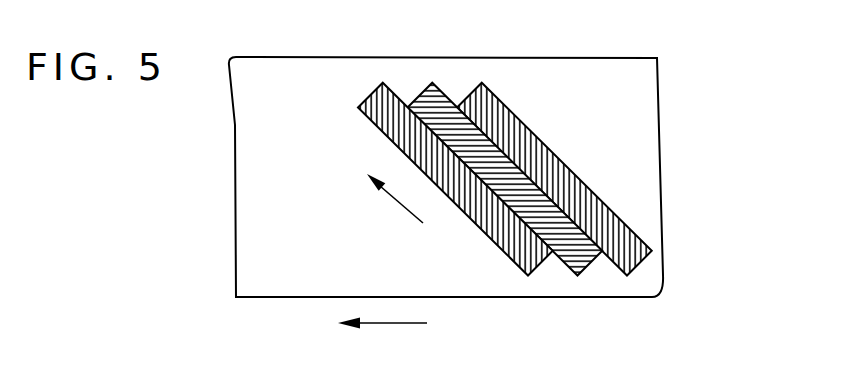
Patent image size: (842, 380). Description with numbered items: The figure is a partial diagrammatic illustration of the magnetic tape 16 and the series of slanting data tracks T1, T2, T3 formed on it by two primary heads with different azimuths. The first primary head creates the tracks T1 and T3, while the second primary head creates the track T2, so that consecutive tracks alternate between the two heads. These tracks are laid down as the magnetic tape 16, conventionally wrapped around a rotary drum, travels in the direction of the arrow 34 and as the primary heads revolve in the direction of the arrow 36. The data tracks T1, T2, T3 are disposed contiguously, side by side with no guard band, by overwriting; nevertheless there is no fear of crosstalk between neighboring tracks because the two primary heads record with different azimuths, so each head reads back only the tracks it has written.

The magnetic tape 16 is at (647, 129).
The data track T1 is at (383, 83).
The data track T2 is at (432, 83).
The data track T3 is at (483, 83).
The arrow 34 is at (395, 324).
The arrow 36 is at (404, 207).